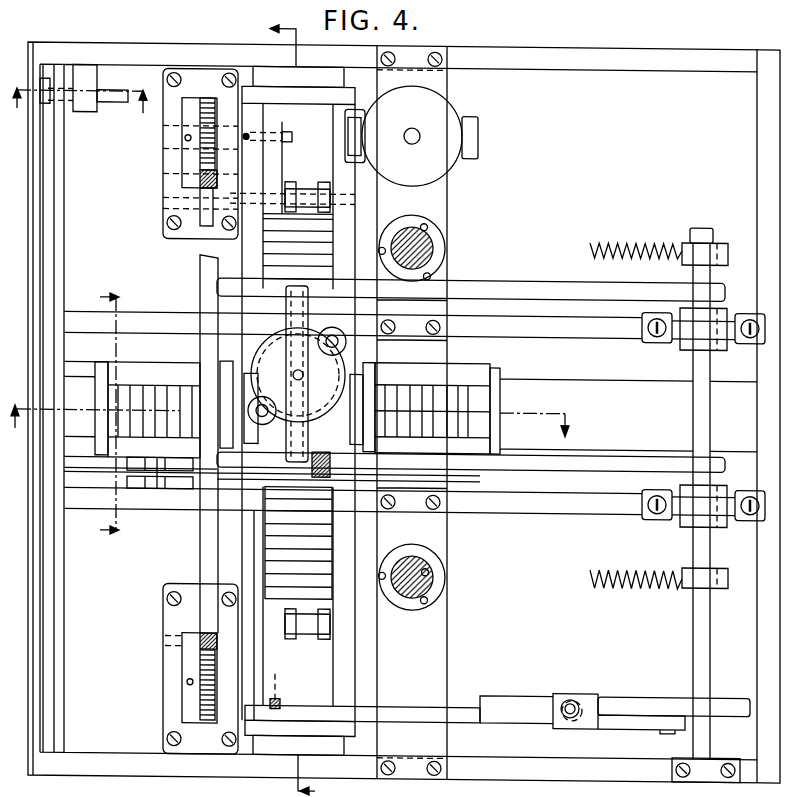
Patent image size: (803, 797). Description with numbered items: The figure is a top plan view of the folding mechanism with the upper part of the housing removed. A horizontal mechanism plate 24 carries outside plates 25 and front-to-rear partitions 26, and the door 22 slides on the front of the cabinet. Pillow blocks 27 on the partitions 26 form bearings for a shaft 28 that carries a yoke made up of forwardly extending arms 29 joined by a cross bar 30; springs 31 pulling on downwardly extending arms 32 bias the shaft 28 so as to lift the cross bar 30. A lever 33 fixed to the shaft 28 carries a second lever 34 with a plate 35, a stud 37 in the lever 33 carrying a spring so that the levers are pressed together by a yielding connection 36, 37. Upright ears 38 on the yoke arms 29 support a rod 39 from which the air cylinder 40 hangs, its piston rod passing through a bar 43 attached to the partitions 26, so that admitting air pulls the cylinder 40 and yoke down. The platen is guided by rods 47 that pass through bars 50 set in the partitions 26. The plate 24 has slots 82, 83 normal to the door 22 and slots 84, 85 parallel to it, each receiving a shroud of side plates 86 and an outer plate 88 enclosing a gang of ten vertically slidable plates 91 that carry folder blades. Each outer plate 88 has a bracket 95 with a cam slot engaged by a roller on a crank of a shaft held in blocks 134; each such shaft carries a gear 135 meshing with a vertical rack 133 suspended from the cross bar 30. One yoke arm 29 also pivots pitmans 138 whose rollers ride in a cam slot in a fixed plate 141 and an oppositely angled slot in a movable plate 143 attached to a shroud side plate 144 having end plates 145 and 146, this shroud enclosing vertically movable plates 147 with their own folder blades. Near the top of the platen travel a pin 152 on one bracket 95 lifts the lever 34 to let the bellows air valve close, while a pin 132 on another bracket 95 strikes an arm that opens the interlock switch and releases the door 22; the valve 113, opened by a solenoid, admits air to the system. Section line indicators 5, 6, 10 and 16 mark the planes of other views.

The section line 5- 5 is at (290, 431).
The section line 6- 6 is at (292, 407).
The section line 10- 10 is at (97, 413).
The pivot rod 16 is at (79, 102).
The door 22 is at (35, 216).
The horizontal mechanism plate 24 is at (661, 415).
The outside plates 25 is at (557, 52).
The partitions 26 is at (589, 333).
The pillow blocks 27 is at (676, 340).
The shaft 28 is at (700, 236).
The yoke arms 29 is at (559, 288).
The cross bar 30 is at (200, 270).
The springs 31 is at (596, 246).
The downwardly extending arms 32 is at (718, 252).
The lever 33 is at (634, 696).
The second lever 34 is at (503, 727).
The plate 35 is at (584, 692).
The yielding connection 36 is at (568, 698).
The stud 37 is at (560, 702).
The upright ears 38 is at (268, 302).
The rod 39 is at (258, 352).
The air cylinder 40 is at (325, 357).
The bar 43 is at (268, 320).
The guide rods 47 is at (424, 245).
The bars 50 is at (437, 646).
The slot 82 is at (79, 379).
The slot 83 is at (662, 382).
The slot 84 is at (340, 77).
The slot 85 is at (340, 745).
The side plates 86 is at (347, 243).
The outer plate 88 is at (328, 610).
The vertically slideable plates 91 is at (325, 551).
The bracket 95 is at (278, 159).
The valve 113 is at (442, 103).
The forwardly projecting pin 132 is at (291, 136).
The vertical rack 133 is at (197, 186).
The blocks 134 is at (163, 225).
The gear 135 is at (196, 152).
The pitmans 138 is at (166, 476).
The fixed plate 141 is at (185, 484).
The movable plate 143 is at (128, 465).
The side plate 144 is at (448, 375).
The end plate 145 is at (373, 370).
The end plate 146 is at (497, 368).
The vertically movable plates 147 is at (465, 401).
The laterally projecting pin 152 is at (283, 706).